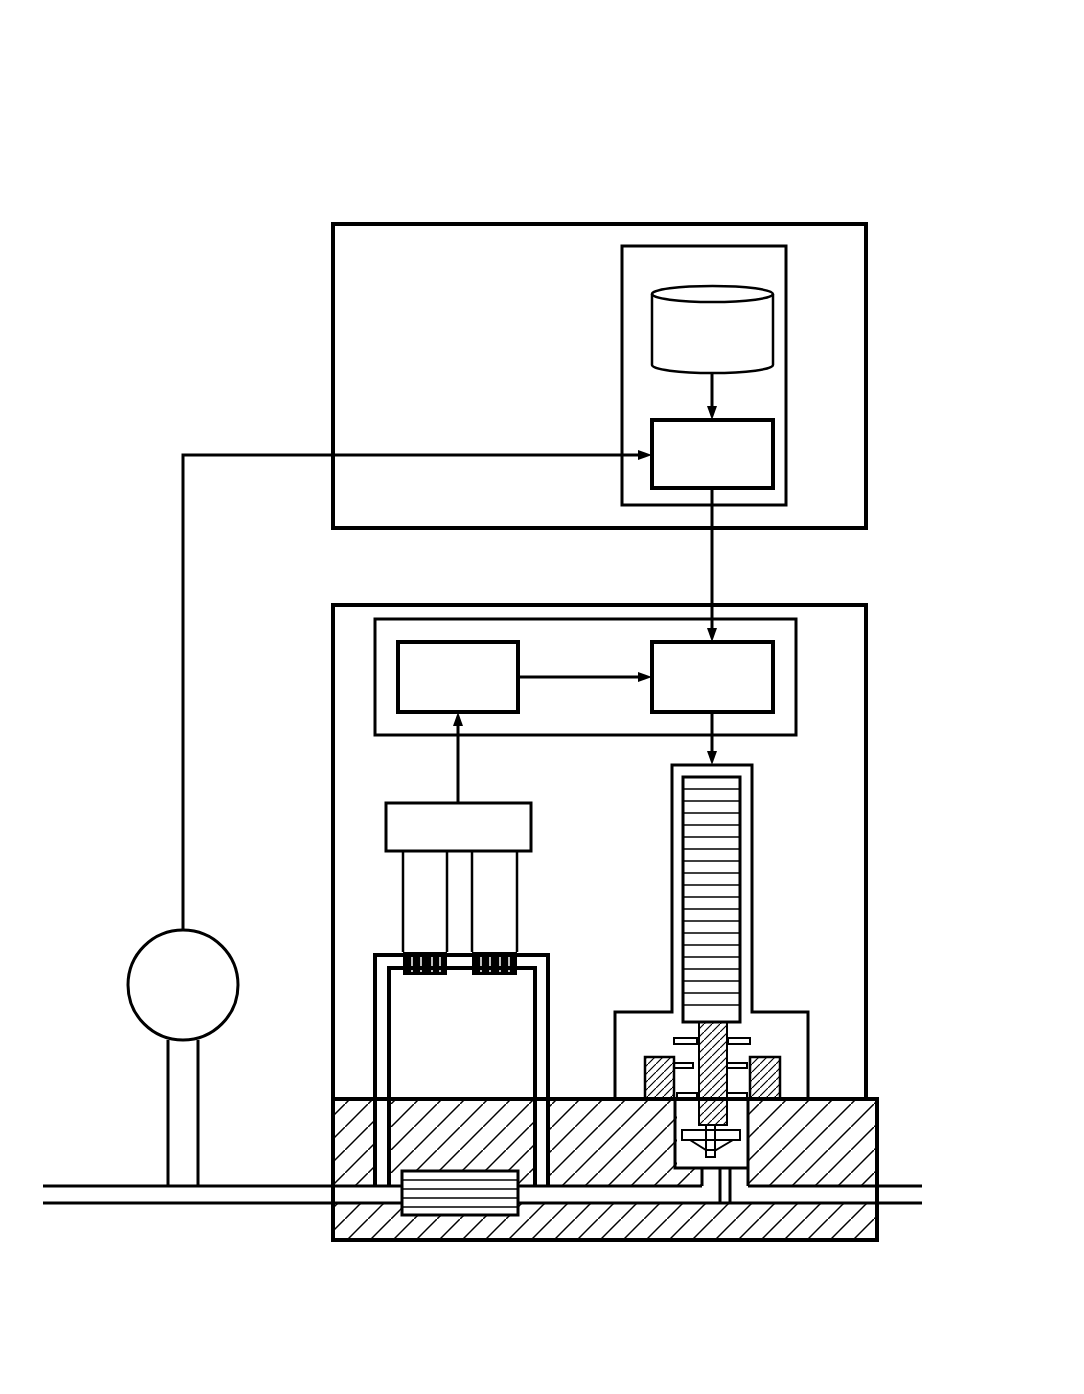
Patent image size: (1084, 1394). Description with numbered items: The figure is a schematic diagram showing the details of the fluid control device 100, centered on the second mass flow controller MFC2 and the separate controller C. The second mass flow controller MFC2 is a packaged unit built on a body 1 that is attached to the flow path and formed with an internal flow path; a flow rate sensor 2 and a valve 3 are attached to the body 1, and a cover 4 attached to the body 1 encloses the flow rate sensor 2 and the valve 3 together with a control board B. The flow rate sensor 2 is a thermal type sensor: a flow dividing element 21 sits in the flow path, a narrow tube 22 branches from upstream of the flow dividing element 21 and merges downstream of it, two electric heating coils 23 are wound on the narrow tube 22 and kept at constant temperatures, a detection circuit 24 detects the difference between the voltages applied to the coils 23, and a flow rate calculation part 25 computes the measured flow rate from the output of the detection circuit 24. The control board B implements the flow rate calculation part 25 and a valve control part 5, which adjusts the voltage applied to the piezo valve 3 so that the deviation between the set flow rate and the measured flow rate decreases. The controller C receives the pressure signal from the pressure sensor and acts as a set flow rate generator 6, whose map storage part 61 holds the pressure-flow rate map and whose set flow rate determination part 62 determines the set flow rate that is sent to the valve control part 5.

The fluid control device 100 is at (790, 85).
The controller C is at (472, 224).
The set flow rate generator 6 is at (786, 298).
The map storage part 61 is at (773, 330).
The set flow rate determination part 62 is at (773, 468).
The second mass flow controller MFC2 is at (900, 580).
The cover 4 is at (866, 752).
The control board B is at (796, 705).
The flow rate calculation part 25 is at (398, 674).
The valve control part 5 is at (773, 668).
The flow rate sensor 2 is at (340, 768).
The detection circuit 24 is at (531, 822).
The electric heating coils 23 is at (433, 975).
The narrow tube 22 is at (373, 995).
The flow dividing element 21 is at (456, 1240).
The body 1 is at (603, 1240).
The valve 3 is at (780, 825).